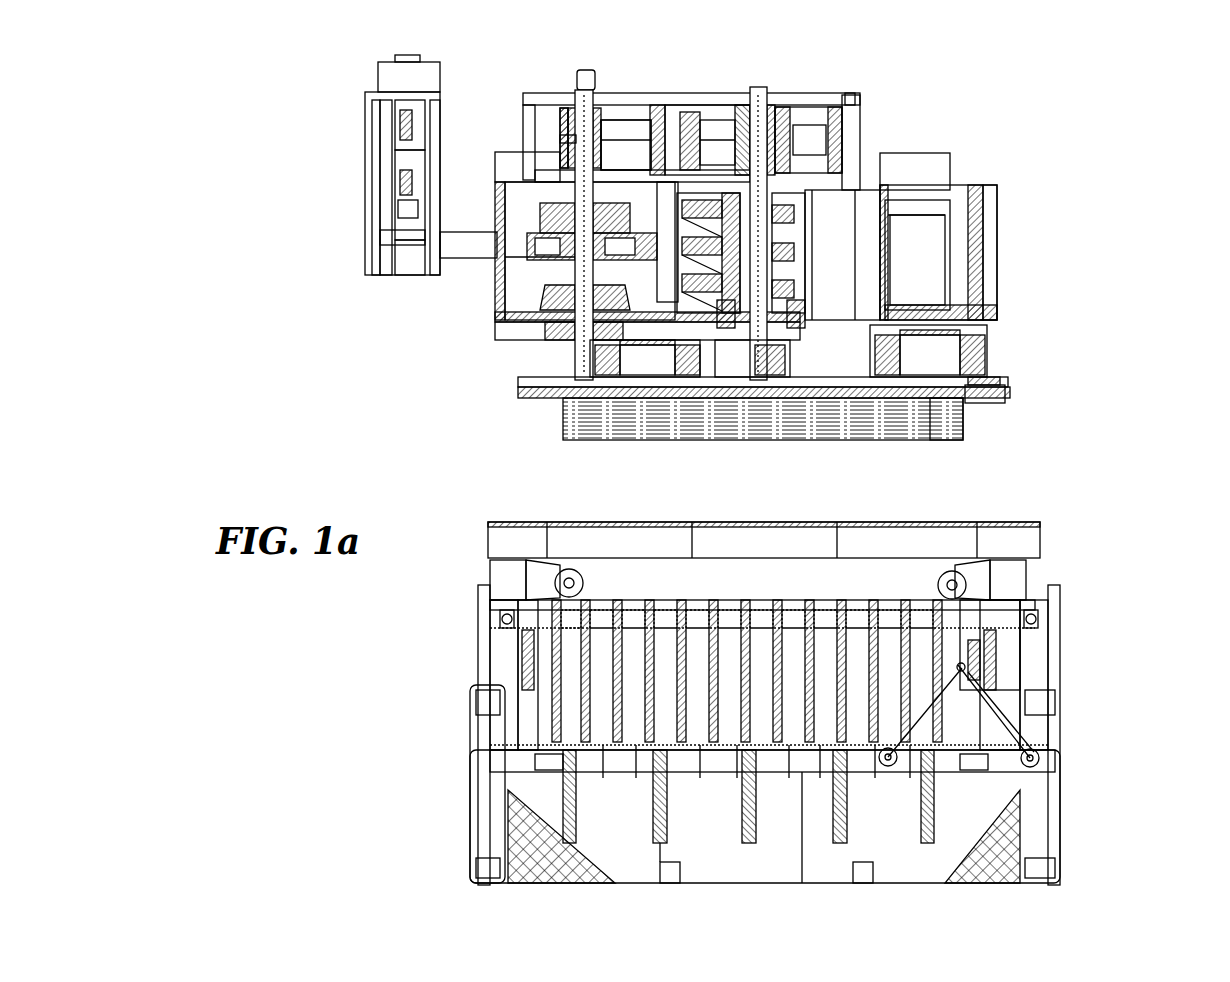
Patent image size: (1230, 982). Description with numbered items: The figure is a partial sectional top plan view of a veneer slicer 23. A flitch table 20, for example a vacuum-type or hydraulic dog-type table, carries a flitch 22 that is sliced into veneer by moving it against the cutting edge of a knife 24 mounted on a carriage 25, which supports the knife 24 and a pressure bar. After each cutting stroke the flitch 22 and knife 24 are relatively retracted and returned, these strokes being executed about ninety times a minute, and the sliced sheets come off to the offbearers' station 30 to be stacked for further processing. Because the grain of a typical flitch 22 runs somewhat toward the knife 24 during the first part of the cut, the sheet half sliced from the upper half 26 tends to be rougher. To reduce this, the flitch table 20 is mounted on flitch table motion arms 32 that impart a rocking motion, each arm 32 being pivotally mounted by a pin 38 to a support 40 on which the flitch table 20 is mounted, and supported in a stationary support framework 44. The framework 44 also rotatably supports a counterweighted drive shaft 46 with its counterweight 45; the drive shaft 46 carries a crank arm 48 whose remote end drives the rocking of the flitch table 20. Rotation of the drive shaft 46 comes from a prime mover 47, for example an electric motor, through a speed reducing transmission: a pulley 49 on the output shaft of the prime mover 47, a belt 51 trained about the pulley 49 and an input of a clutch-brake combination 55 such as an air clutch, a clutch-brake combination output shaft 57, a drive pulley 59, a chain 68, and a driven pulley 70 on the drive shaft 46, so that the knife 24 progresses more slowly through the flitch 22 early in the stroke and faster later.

The flitch table 20 is at (555, 400).
The flitch 22 is at (575, 440).
The veneer slicer 23 is at (1048, 148).
The knife 24 is at (780, 522).
The carriage 25 is at (1067, 550).
The upper half 26 is at (950, 420).
The offbearers' station 30 is at (1099, 756).
The flitch table motion arm 32 is at (580, 368).
The pin 38 is at (650, 370).
The support 40 is at (1003, 384).
The stationary support framework 44 is at (985, 300).
The counterweight 45 is at (815, 265).
The drive shaft 46 is at (800, 220).
The prime mover 47 is at (368, 100).
The crank arm 48 is at (780, 365).
The pulley 49 is at (380, 240).
The belt 51 is at (470, 270).
The clutch-brake combination 55 is at (592, 100).
The clutch-brake combination output shaft 57 is at (560, 140).
The drive pulley 59 is at (560, 120).
The chain 68 is at (635, 130).
The driven pulley 70 is at (820, 140).